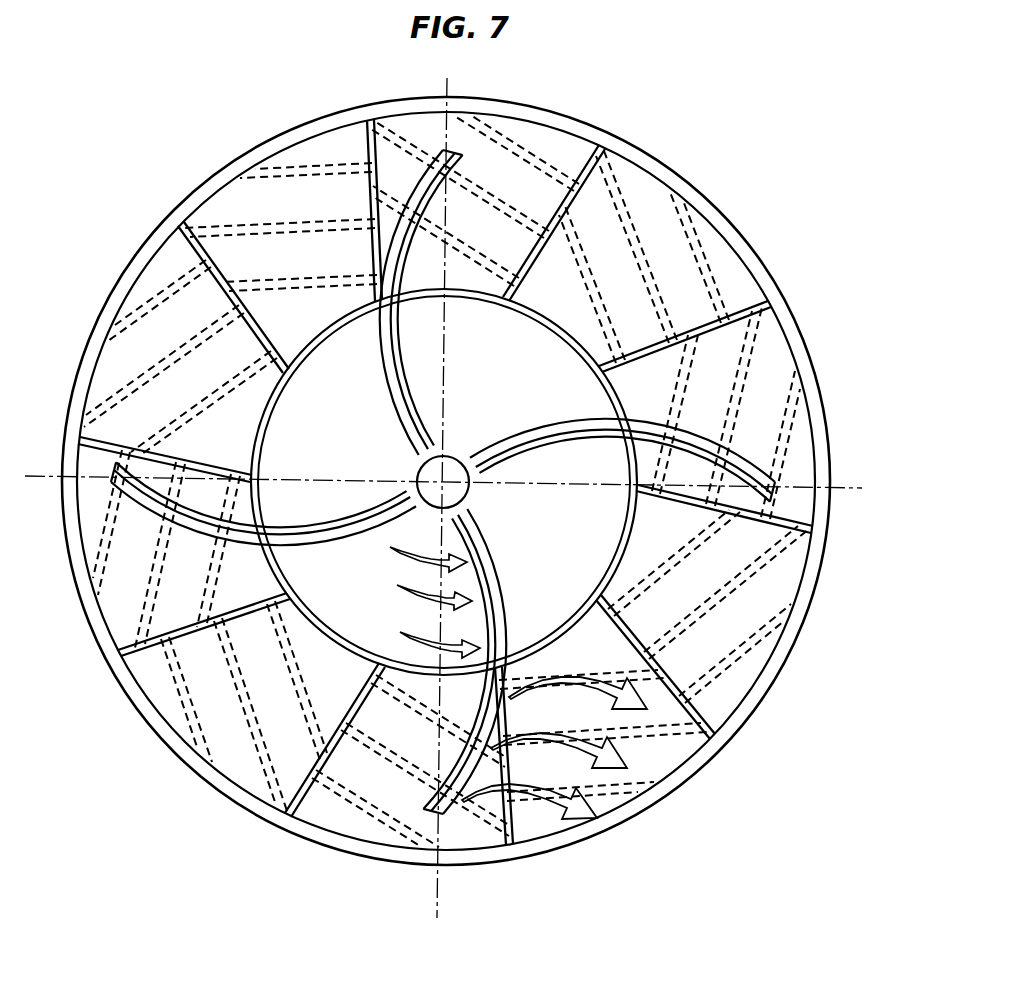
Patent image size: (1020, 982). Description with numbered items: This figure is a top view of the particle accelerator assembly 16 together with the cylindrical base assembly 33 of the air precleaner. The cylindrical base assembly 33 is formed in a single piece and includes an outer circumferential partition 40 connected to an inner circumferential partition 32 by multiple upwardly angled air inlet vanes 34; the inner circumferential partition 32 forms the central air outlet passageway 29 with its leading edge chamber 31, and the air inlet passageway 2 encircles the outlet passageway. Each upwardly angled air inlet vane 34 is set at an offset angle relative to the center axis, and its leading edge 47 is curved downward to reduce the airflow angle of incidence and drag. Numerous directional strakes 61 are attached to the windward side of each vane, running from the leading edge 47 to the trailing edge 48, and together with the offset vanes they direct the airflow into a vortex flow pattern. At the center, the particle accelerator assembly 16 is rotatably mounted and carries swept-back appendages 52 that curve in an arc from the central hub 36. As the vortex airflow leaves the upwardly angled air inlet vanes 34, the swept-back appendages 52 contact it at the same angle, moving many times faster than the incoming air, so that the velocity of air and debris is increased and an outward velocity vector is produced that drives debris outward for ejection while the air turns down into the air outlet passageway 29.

The air inlet passageway 2 is at (512, 828).
The particle accelerator assembly 16 is at (455, 455).
The air outlet passageway 29 is at (472, 362).
The leading edge chamber 31 is at (313, 347).
The inner circumferential partition 32 is at (280, 408).
The cylindrical base assembly 33 is at (130, 268).
The upwardly angled air inlet vane 34 is at (745, 612).
The central hub 36 is at (425, 488).
The outer circumferential partition 40 is at (196, 775).
The leading edge 47 is at (700, 737).
The trailing edge 48 is at (808, 530).
The swept-back appendage 52 is at (716, 437).
The directional strake 61 is at (585, 279).